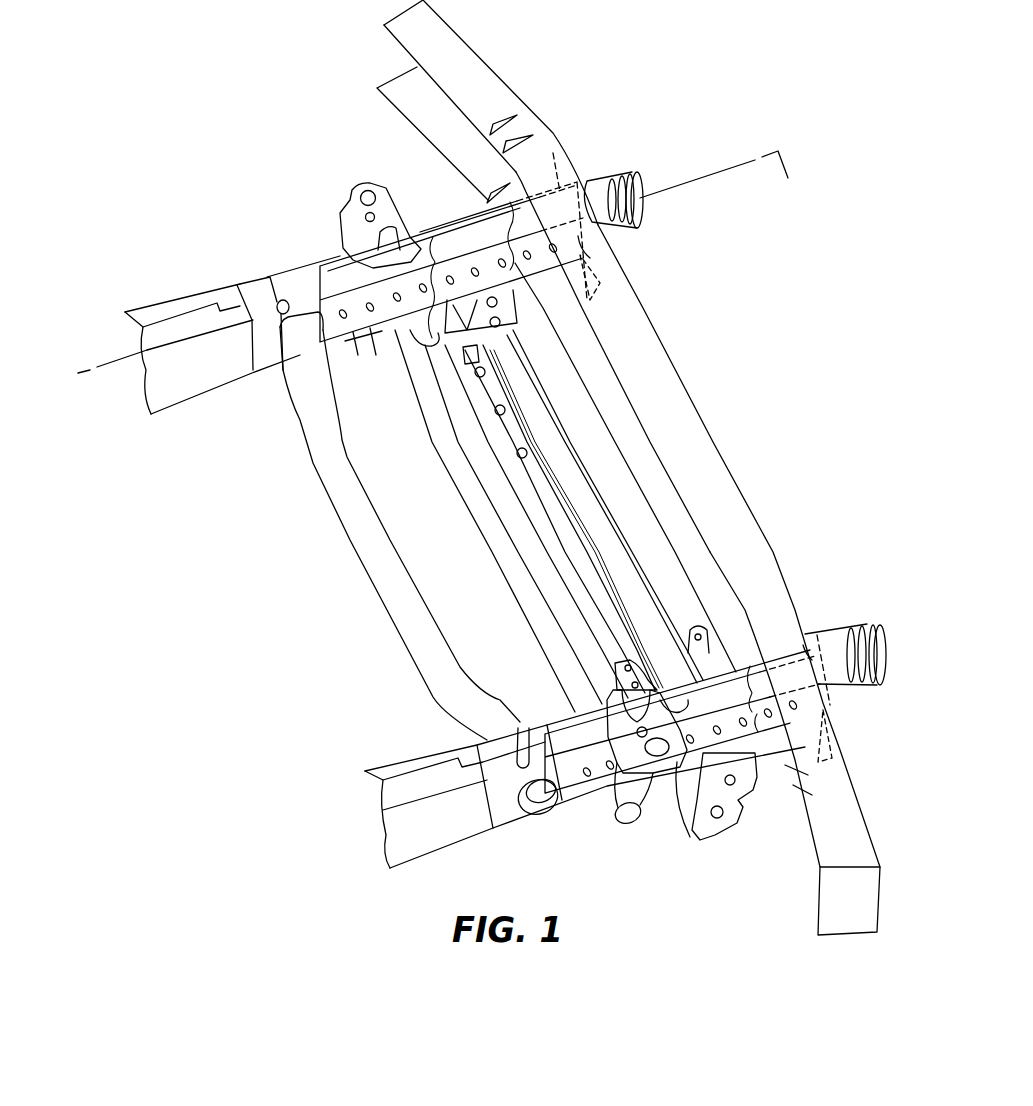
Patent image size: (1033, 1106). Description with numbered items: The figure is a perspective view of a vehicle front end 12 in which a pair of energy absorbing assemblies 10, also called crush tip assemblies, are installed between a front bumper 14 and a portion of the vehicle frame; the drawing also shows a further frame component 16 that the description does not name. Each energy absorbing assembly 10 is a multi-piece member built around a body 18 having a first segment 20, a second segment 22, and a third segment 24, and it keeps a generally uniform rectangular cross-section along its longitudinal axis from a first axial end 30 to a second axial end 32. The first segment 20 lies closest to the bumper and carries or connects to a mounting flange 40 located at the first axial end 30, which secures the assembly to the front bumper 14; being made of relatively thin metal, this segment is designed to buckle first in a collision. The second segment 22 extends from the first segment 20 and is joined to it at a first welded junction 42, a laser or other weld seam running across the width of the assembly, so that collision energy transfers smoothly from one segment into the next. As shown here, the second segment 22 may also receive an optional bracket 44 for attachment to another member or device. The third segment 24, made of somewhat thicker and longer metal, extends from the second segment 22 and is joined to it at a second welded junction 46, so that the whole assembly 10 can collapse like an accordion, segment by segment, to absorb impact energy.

The energy absorbing assembly 10 is at (330, 257).
The vehicle front end 12 is at (560, 60).
The front bumper 14 is at (672, 358).
The frame rail surface 16 is at (690, 424).
The body 18 is at (418, 245).
The first segment 20 is at (563, 200).
The second segment 22 is at (462, 230).
The third segment 24 is at (343, 332).
The first axial end 30 is at (588, 258).
The second axial end 32 is at (315, 275).
The mounting flange 40 is at (583, 242).
The first welded junction 42 is at (518, 273).
The bracket 44 is at (480, 330).
The second welded junction 46 is at (437, 300).